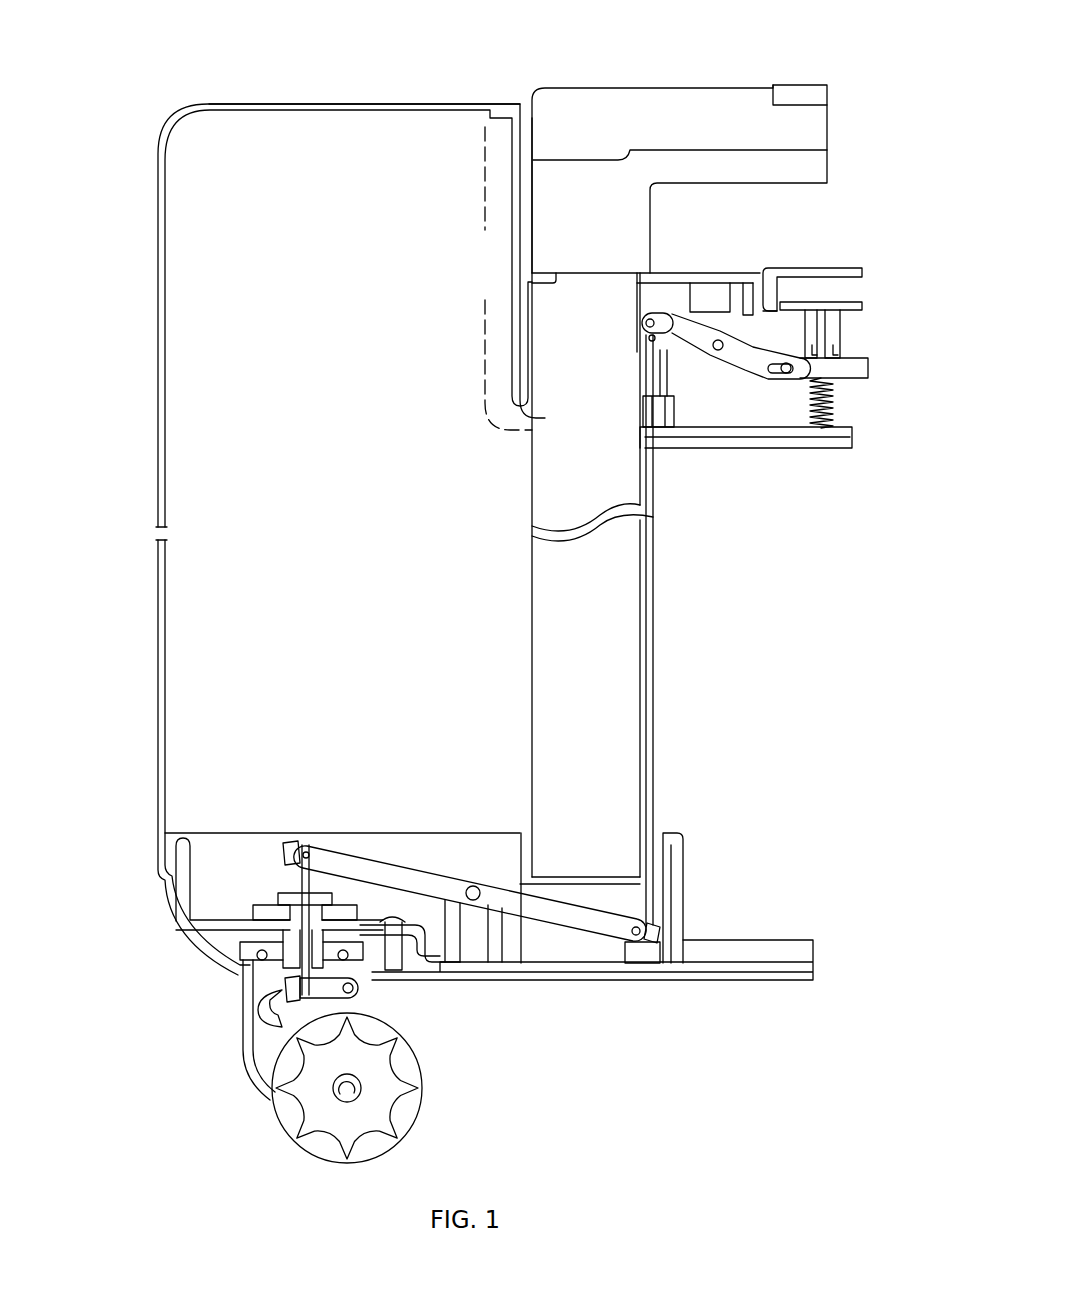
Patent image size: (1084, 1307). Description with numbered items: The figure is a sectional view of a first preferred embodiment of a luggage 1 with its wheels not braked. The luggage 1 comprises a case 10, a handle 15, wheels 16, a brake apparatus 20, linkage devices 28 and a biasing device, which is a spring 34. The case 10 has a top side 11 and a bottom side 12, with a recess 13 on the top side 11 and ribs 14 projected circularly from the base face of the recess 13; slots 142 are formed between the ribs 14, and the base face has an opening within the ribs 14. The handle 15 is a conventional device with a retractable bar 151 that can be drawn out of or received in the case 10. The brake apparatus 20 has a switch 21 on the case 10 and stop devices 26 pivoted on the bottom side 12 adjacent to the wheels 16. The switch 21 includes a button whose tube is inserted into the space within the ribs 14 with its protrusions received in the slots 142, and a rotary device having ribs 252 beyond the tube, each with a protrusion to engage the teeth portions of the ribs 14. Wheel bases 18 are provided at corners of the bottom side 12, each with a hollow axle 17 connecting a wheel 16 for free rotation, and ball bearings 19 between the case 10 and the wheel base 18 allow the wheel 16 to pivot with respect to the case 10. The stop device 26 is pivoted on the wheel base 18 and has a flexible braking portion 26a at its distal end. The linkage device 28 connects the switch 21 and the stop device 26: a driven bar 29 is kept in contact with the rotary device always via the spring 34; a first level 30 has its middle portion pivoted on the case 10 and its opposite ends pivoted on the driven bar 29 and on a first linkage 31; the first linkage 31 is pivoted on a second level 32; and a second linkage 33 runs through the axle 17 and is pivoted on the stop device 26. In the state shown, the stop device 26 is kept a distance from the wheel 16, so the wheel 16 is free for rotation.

The luggage 1 is at (258, 97).
The case 10 is at (158, 432).
The top side 11 is at (370, 100).
The bottom side 12 is at (598, 963).
The recess 13 is at (787, 198).
The ribs 14 is at (843, 337).
The slots 142 is at (845, 327).
The ribs 252 is at (888, 329).
The handle 15 is at (600, 88).
The retractable bar 151 is at (670, 102).
The wheels 16 is at (422, 1077).
The hollow axle 17 is at (250, 915).
The wheel base 18 is at (243, 1055).
The ball bearings 19 is at (256, 957).
The brake apparatus 20 is at (830, 260).
The switch 21 is at (855, 268).
The stop device 26 is at (293, 990).
The flexible braking portion 26a is at (258, 1010).
The linkage device 28 is at (653, 708).
The driven bar 29 is at (853, 370).
The first level 30 is at (748, 372).
The first linkage 31 is at (655, 662).
The second level 32 is at (400, 870).
The second linkage 33 is at (287, 884).
The spring 34 is at (843, 405).